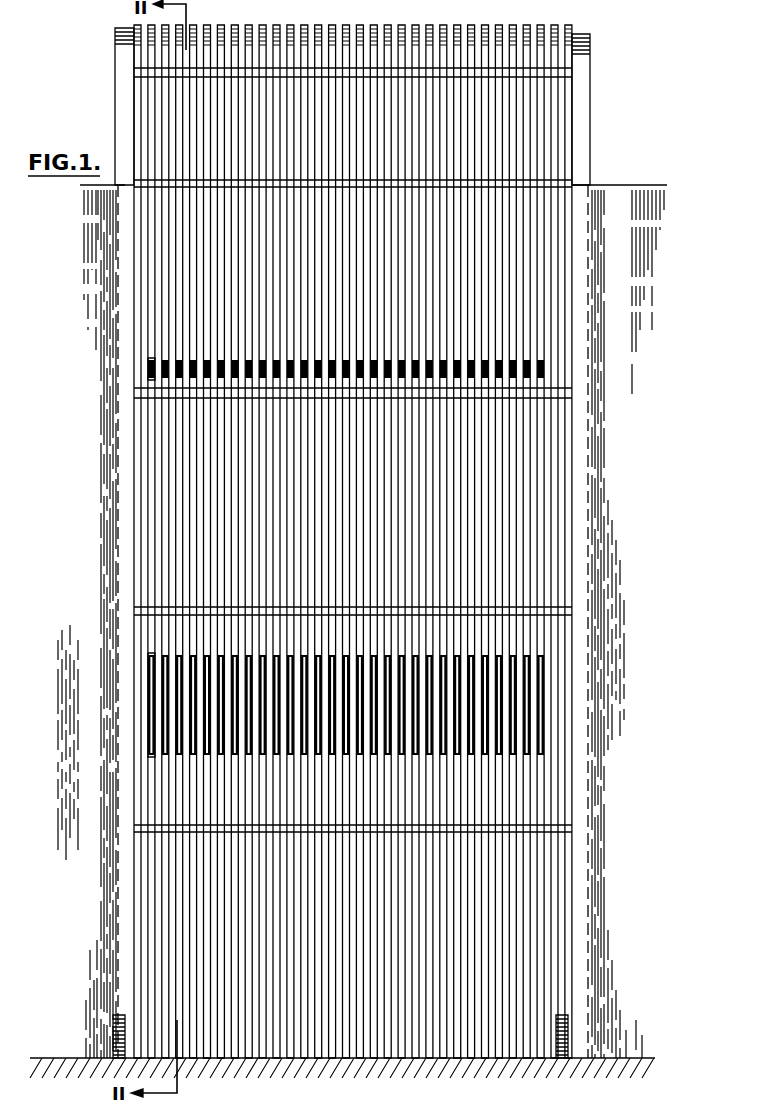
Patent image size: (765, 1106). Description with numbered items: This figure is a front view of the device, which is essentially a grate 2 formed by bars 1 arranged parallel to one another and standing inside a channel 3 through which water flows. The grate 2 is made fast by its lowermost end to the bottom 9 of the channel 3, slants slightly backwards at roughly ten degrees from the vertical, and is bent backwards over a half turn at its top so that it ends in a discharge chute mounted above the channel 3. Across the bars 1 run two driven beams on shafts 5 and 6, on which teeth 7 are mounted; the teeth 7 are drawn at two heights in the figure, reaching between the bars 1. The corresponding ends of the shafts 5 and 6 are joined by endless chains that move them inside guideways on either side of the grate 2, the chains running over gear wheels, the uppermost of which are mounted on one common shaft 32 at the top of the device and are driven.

The bars 1 is at (250, 26).
The grate 2 is at (362, 15).
The channel 3 is at (89, 575).
The shaft 5 is at (557, 370).
The shaft 6 is at (553, 746).
The teeth 7 is at (180, 372).
The bottom 9 is at (70, 1058).
The shaft 32 is at (550, 74).